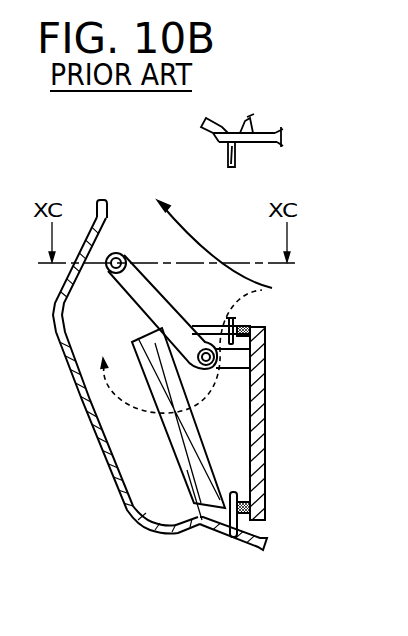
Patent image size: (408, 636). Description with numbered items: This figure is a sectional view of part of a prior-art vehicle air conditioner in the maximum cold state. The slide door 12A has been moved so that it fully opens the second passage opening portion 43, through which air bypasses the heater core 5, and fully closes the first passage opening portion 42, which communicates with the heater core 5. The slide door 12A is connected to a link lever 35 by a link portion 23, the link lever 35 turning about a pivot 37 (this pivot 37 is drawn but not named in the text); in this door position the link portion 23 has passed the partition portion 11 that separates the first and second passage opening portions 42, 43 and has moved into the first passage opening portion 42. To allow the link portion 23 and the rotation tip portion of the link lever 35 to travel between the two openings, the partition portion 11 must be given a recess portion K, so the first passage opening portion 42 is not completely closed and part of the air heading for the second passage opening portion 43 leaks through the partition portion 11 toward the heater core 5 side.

The heater core 5 is at (213, 500).
The partition portion 11 is at (206, 325).
The slide door 12A is at (257, 425).
The link portion 23 is at (243, 357).
The link lever 35 is at (126, 294).
The pivot pin 37 is at (117, 252).
The first passage opening portion 42 is at (237, 438).
The second passage opening portion 43 is at (235, 228).